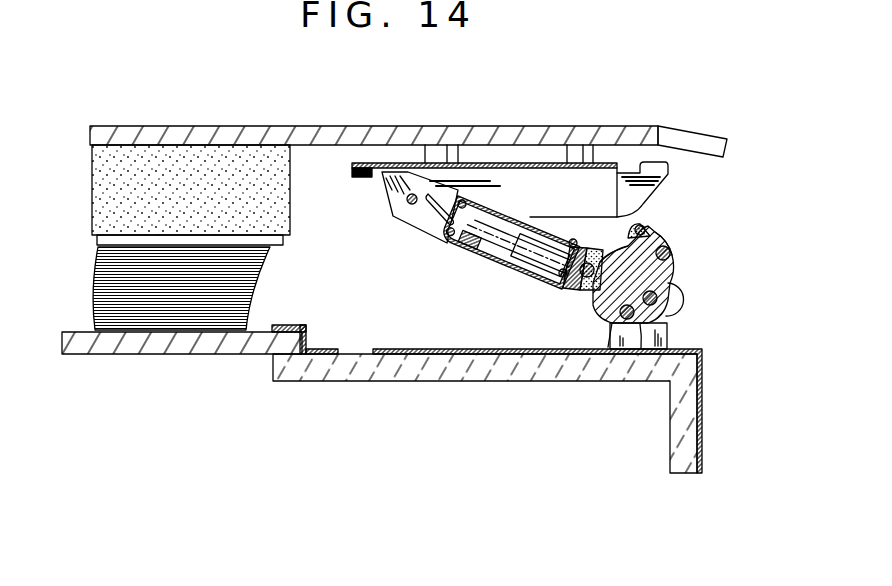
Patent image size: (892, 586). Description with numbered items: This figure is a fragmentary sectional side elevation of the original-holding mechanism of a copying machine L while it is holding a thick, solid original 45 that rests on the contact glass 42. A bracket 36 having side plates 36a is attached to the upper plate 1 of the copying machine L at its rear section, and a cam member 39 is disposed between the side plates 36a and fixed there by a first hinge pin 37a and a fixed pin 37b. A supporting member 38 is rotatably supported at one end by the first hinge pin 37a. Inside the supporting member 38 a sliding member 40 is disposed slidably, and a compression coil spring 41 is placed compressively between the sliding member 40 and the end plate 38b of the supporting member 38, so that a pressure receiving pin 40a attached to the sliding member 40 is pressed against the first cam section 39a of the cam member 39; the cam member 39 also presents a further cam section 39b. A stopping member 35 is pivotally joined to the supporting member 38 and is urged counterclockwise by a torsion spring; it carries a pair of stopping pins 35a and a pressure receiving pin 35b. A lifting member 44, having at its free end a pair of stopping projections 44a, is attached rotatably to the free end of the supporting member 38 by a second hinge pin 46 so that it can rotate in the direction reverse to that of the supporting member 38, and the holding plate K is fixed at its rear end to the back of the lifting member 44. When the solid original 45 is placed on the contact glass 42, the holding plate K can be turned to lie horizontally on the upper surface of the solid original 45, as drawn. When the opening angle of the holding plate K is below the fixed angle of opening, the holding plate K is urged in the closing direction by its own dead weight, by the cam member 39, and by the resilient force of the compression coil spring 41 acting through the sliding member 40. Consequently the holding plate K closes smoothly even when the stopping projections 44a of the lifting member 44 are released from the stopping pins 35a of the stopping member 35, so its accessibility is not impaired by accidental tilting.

The holding plate K is at (254, 125).
The copying machine L is at (703, 436).
The upper plate 1 is at (420, 382).
The stopping member 35 is at (672, 240).
The stopping pins 35a is at (670, 260).
The pressure receiving pin 35b is at (648, 232).
The bracket 36 is at (674, 330).
The side plates 36a is at (642, 338).
The first hinge pin 37a is at (680, 298).
The fixed pin 37b is at (612, 336).
The supporting member 38 is at (476, 262).
The end plate 38b is at (452, 225).
The cam member 39 is at (740, 287).
The first cam section 39a is at (601, 259).
The hinge body edge 39b is at (669, 255).
The sliding member 40 is at (632, 225).
The pressure receiving pin 40a is at (582, 288).
The compression coil spring 41 is at (530, 277).
The contact glass 42 is at (200, 355).
The lifting member 44 is at (486, 162).
The stopping projections 44a is at (650, 162).
The solid original 45 is at (257, 270).
The second hinge pin 46 is at (407, 204).